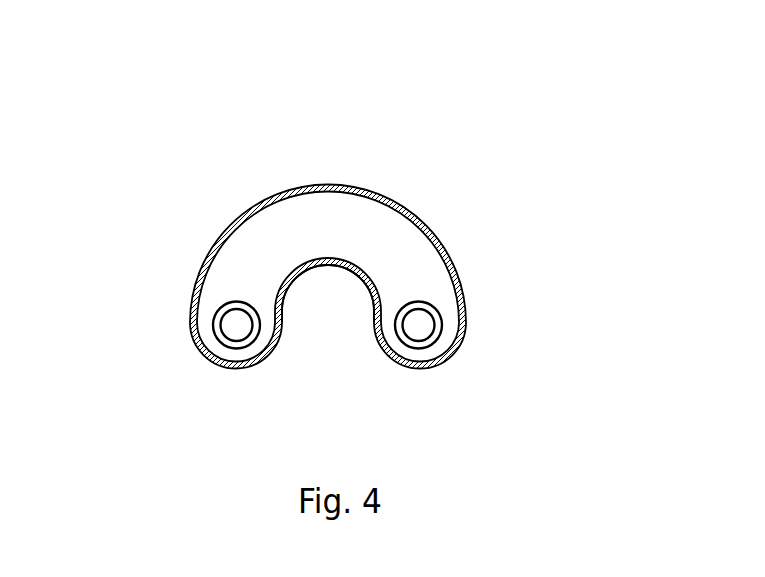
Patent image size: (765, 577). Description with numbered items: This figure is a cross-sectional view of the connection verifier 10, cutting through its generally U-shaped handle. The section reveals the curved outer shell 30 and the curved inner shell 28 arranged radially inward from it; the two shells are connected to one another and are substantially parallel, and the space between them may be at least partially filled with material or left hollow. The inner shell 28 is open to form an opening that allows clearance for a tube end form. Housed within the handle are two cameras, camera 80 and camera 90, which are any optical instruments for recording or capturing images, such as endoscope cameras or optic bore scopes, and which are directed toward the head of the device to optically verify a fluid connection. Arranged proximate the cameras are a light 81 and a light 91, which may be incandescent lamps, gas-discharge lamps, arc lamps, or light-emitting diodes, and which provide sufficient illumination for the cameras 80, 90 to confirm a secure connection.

The connection verifier 10 is at (146, 99).
The inner shell 28 is at (325, 267).
The outer shell 30 is at (330, 185).
The camera 80 is at (422, 326).
The light 81 is at (433, 307).
The camera 90 is at (236, 326).
The light 91 is at (222, 306).